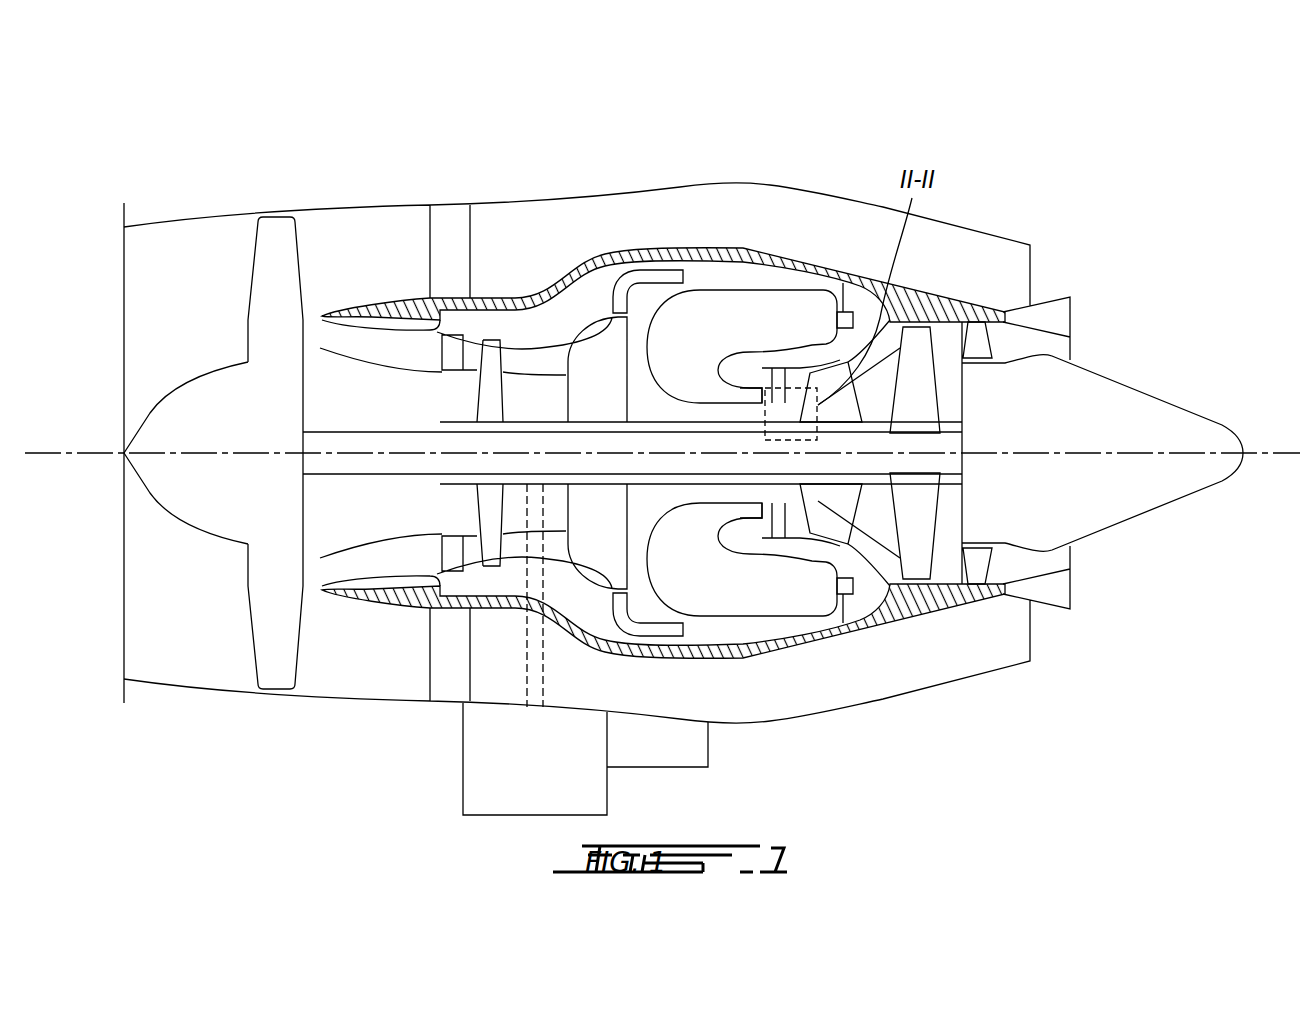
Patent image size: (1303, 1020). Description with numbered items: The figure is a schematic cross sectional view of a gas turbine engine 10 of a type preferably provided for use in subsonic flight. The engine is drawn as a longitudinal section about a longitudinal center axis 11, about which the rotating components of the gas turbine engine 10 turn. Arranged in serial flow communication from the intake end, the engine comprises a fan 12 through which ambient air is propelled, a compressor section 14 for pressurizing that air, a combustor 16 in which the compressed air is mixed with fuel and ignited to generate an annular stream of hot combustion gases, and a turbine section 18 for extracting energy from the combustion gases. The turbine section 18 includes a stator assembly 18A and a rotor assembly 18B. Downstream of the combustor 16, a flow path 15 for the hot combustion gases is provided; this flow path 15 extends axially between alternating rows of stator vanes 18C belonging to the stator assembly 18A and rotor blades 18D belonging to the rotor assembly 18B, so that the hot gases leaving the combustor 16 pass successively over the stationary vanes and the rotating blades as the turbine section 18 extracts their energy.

The gas turbine engine 10 is at (888, 143).
The longitudinal center axis 11 is at (1283, 453).
The fan 12 is at (277, 612).
The compressor section 14 is at (525, 352).
The flow path 15 is at (843, 594).
The combustor 16 is at (743, 302).
The turbine section 18 is at (873, 520).
The stator assembly 18A is at (800, 543).
The rotor assembly 18B is at (835, 363).
The stator vanes 18C is at (763, 538).
The rotor blades 18D is at (843, 408).